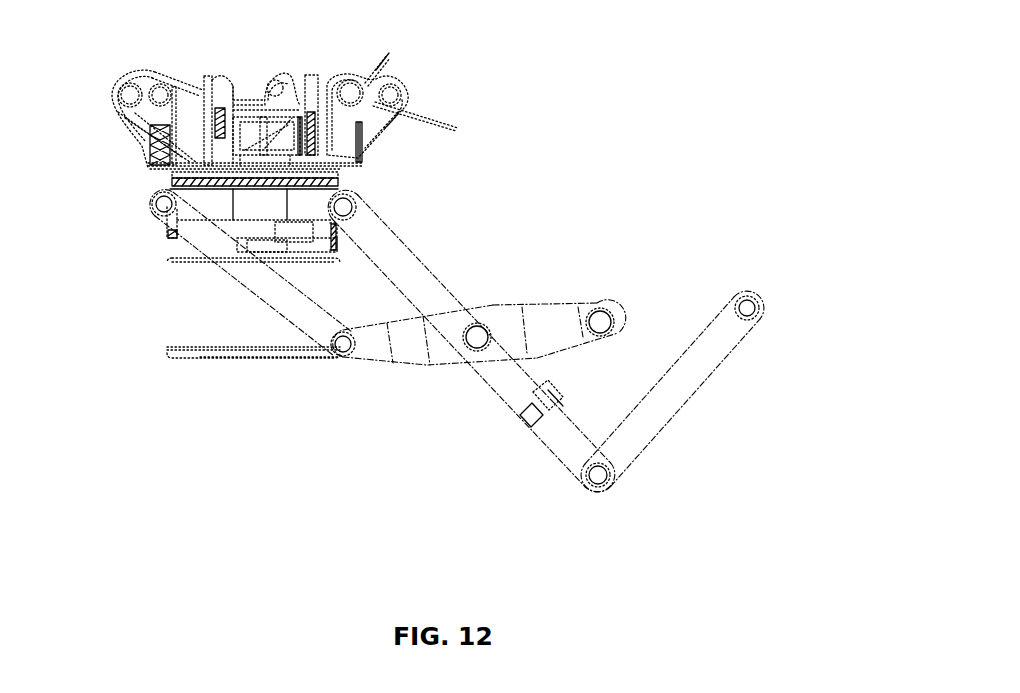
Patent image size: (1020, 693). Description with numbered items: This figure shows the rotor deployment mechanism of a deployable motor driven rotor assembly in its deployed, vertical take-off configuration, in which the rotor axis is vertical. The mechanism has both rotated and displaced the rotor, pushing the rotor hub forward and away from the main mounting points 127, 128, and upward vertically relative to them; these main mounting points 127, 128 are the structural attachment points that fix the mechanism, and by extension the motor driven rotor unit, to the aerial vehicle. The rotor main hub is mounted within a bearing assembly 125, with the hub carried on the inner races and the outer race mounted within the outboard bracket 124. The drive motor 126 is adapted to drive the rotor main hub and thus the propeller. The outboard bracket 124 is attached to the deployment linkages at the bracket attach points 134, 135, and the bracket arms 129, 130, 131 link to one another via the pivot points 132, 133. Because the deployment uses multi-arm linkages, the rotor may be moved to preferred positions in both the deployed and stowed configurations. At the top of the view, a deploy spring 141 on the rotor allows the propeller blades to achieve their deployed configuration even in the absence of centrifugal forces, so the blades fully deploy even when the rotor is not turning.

The outboard bracket 124 is at (203, 202).
The bearing assembly 125 is at (343, 178).
The drive motor 126 is at (168, 340).
The main mounting point 127 is at (603, 307).
The main mounting point 128 is at (752, 298).
The bracket arm 129 is at (700, 397).
The bracket arm 130 is at (417, 368).
The bracket arm 131 is at (533, 440).
The pivot point 132 is at (510, 305).
The pivot point 133 is at (343, 357).
The bracket attach point 134 is at (153, 213).
The bracket attach point 135 is at (357, 203).
The deploy spring 141 is at (430, 120).